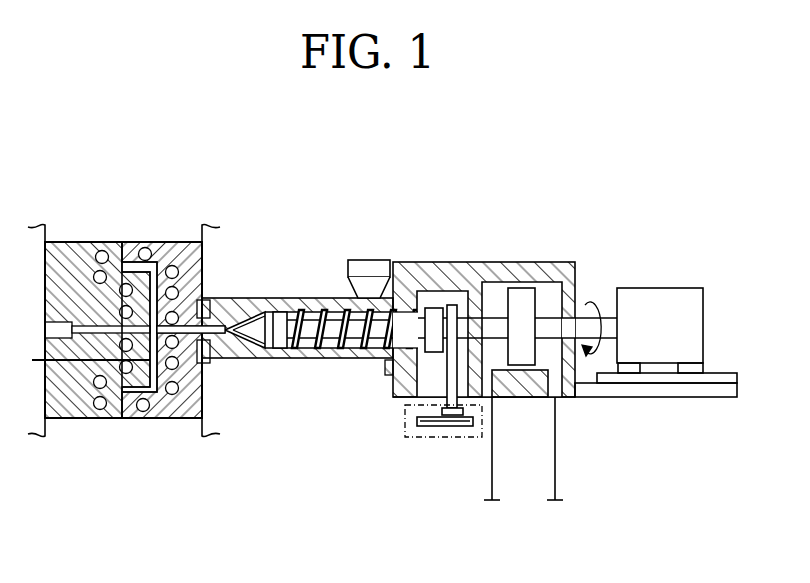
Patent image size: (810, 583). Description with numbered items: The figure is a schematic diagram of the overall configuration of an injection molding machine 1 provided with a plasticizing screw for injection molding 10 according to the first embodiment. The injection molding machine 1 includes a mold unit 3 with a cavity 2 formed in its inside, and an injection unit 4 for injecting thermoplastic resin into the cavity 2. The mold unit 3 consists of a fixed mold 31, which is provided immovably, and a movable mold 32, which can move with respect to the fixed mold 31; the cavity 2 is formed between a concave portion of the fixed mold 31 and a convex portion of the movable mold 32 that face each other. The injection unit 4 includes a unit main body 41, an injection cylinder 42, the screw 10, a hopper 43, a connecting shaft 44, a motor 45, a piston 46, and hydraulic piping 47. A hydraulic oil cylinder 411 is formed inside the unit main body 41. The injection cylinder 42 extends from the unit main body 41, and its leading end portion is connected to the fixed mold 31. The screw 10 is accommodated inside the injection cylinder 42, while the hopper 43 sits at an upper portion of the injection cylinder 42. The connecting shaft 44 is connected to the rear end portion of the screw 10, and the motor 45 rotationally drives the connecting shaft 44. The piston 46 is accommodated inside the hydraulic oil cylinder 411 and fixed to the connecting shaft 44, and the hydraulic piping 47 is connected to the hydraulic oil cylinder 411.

The injection molding machine 1 is at (452, 210).
The cavity 2 is at (133, 402).
The mold unit 3 is at (181, 440).
The fixed mold 31 is at (158, 242).
The movable mold 32 is at (78, 242).
The plasticizing screw for injection molding 10 is at (303, 292).
The injection cylinder 42 is at (272, 359).
The hopper 43 is at (370, 260).
The injection unit 4 is at (494, 236).
The unit main body 41 is at (532, 262).
The hydraulic oil cylinder 411 is at (500, 362).
The connecting shaft 44 is at (548, 306).
The motor 45 is at (670, 288).
The piston 46 is at (538, 355).
The hydraulic piping 47 is at (492, 470).